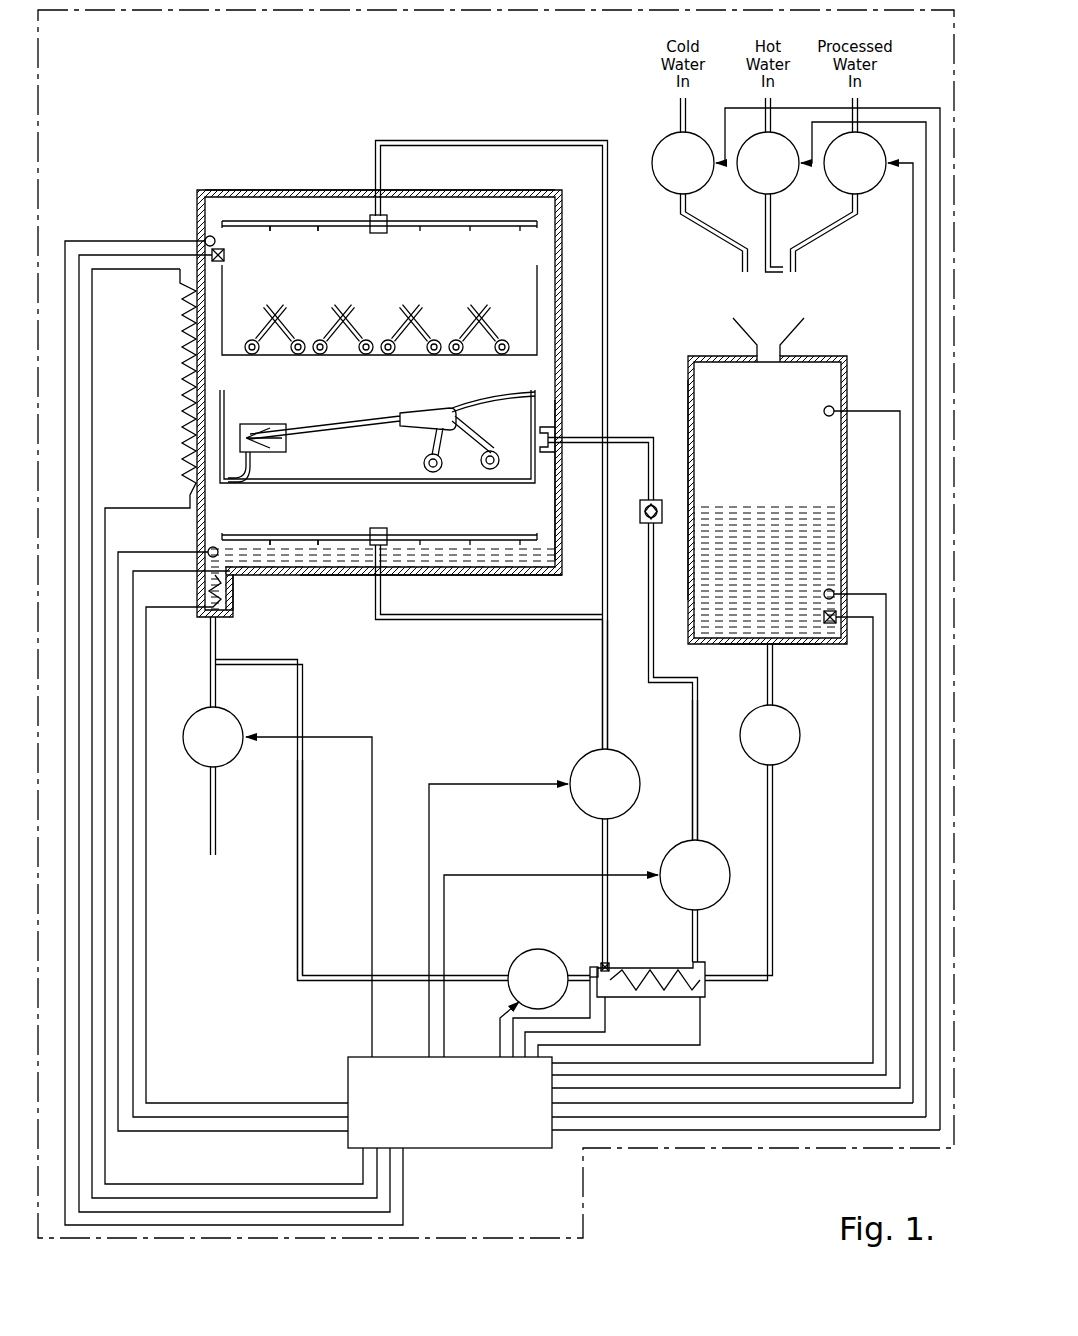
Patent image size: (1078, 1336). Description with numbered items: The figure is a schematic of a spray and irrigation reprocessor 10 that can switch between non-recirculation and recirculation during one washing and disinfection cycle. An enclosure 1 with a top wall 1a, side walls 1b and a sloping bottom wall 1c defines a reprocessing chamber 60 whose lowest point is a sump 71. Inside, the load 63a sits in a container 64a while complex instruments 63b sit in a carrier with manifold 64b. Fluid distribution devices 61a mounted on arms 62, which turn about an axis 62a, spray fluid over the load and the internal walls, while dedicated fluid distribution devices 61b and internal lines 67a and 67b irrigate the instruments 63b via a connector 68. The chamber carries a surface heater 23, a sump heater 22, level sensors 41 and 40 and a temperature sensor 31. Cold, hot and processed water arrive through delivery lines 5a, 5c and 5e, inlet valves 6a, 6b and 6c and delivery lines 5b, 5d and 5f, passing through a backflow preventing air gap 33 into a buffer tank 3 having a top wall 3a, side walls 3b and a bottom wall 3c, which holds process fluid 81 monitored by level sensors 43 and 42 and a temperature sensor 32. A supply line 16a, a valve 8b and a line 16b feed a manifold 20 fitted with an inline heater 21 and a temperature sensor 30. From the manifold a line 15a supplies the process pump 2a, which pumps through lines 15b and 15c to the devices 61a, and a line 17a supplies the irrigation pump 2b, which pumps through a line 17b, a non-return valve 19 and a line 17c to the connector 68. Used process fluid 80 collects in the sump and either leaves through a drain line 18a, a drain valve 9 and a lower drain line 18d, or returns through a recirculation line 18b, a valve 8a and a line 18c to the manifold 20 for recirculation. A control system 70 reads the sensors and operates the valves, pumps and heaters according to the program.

The reprocessor 10 is at (225, 12).
The enclosure 1 is at (252, 190).
The top wall 1a is at (286, 190).
The side wall 1b is at (553, 460).
The bottom wall 1c is at (540, 567).
The used process fluid 80 is at (548, 546).
The fluid distribution devices 61a is at (425, 229).
The arms 62 is at (331, 229).
The lower spray arm connector 62a is at (384, 535).
The container 64a is at (534, 334).
The reprocessing chamber 60 is at (377, 315).
The load 63a is at (281, 318).
The carrier with manifold 64b is at (229, 396).
The complex instruments 63b is at (331, 421).
The dedicated fluid distribution devices 61b is at (277, 421).
The internal connection line 67a is at (252, 461).
The internal line 67b is at (504, 398).
The connector 68 is at (552, 426).
The surface heater 23 is at (181, 357).
The level sensor 41 is at (206, 236).
The temperature sensor 31 is at (210, 252).
The fluid level sensor 40 is at (207, 550).
The sump heater 22 is at (216, 585).
The sump 71 is at (212, 618).
The line 15c is at (490, 619).
The line 15b is at (600, 721).
The line 15a is at (600, 936).
The process pump 2a is at (626, 760).
The irrigation pump 2b is at (709, 849).
The line 17c is at (617, 437).
The line 17b is at (692, 788).
The line 17a is at (694, 931).
The non-return valve 19 is at (645, 499).
The buffer tank 3 is at (726, 687).
The top wall 3a is at (712, 361).
The side wall 3b is at (689, 456).
The bottom wall 3c is at (783, 646).
The backflow preventing system 33 is at (768, 321).
The process fluid 81 is at (767, 570).
The fluid level sensor 42 is at (822, 413).
The fluid level sensor 43 is at (826, 589).
The temperature sensor 32 is at (834, 610).
The supply line 16a is at (775, 690).
The valve 8b is at (792, 754).
The line 16b is at (776, 823).
The manifold 20 is at (709, 994).
The inline heater 21 is at (704, 1006).
The temperature sensor 30 is at (599, 962).
The line 18c is at (587, 966).
The valve 8a is at (521, 957).
The drain line 18a is at (220, 681).
The recirculation line 18b is at (298, 924).
The drain valve 9 is at (194, 758).
The lower drain line 18d is at (220, 809).
The control system 70 is at (509, 1153).
The delivery line 5a is at (746, 603).
The delivery line 5c is at (739, 596).
The delivery line 5e is at (745, 589).
The cold water valve 6a is at (666, 194).
The hot water valve 6b is at (752, 192).
The processed water valve 6c is at (840, 192).
The delivery line 5b is at (692, 202).
The delivery line 5d is at (778, 273).
The delivery line 5f is at (800, 256).